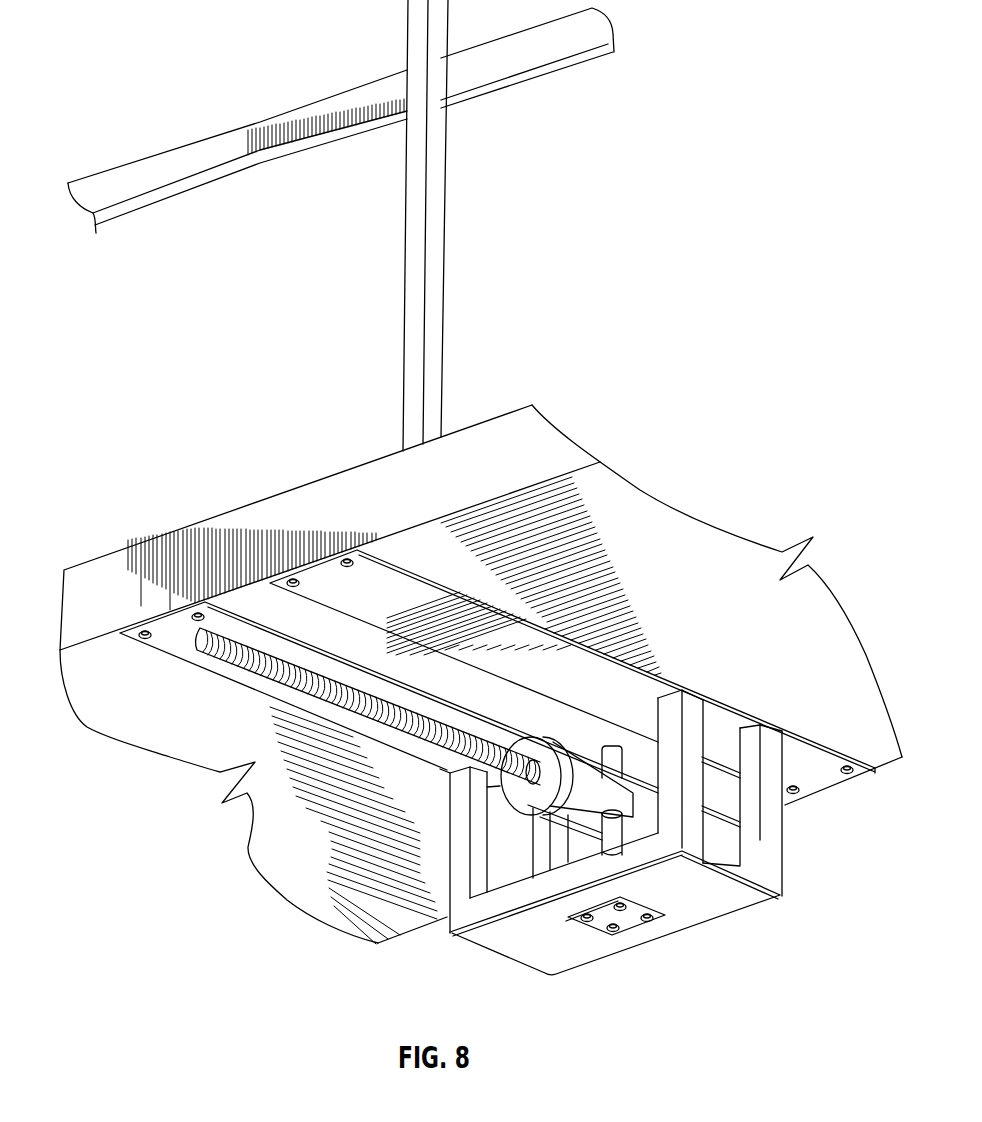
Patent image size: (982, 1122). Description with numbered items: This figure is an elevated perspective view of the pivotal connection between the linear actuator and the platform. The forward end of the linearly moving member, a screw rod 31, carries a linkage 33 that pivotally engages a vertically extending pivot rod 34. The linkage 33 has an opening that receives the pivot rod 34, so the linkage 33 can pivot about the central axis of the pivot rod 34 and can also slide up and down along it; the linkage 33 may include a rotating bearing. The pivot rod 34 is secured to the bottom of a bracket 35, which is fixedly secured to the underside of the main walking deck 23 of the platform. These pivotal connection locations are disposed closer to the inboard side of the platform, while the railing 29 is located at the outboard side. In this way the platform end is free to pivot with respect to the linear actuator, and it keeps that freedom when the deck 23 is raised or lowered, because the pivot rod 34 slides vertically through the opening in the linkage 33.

The main walking deck 23 is at (92, 688).
The railing 29 is at (441, 263).
The screw rod 31 is at (255, 672).
The linkage 33 is at (585, 795).
The pivot rod 34 is at (607, 748).
The bracket 35 is at (685, 910).